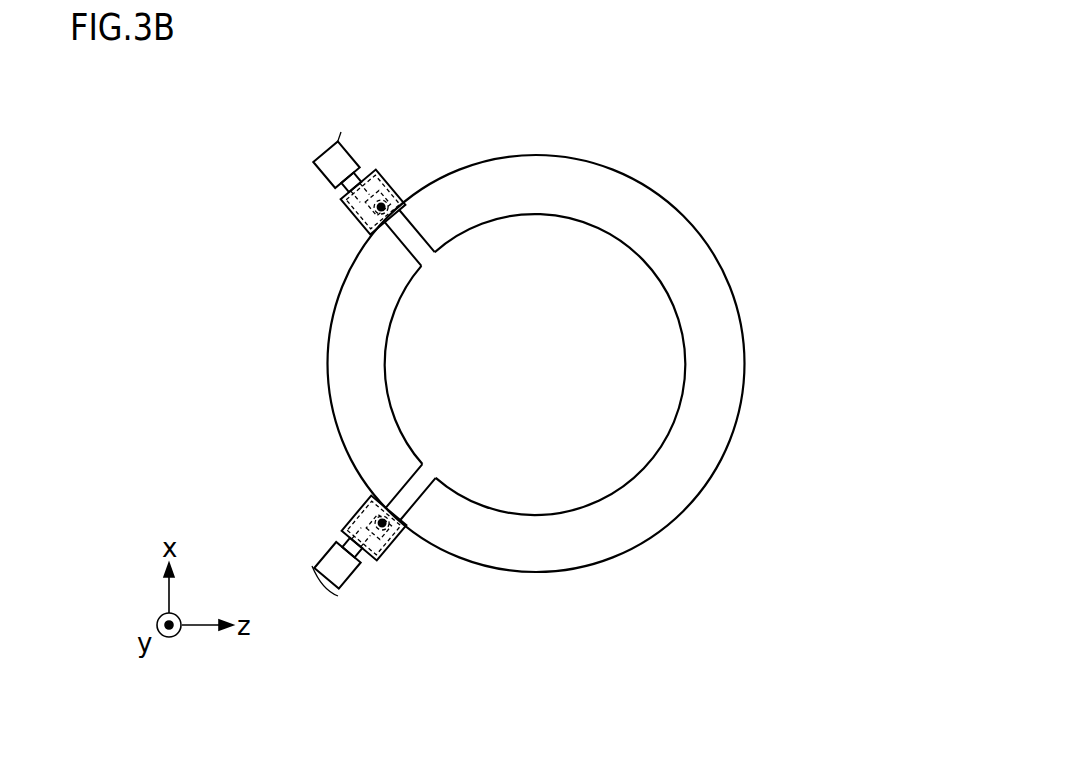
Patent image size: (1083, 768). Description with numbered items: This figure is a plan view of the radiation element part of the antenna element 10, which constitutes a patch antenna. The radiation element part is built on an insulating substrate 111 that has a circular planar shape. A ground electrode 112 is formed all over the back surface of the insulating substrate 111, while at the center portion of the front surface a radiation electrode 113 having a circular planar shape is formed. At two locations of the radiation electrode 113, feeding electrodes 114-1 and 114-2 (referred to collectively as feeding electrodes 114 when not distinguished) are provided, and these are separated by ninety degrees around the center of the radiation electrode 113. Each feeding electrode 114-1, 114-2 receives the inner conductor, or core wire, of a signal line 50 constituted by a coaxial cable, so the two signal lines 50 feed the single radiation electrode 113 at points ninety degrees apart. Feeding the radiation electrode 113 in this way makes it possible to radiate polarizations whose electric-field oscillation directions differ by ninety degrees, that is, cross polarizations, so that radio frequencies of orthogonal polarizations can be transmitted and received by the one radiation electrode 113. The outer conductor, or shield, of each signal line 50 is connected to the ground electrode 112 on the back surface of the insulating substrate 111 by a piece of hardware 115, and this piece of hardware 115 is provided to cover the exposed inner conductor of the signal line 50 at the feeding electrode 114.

The antenna element 10 is at (708, 173).
The signal line 50 is at (316, 168).
The insulating substrate 111 is at (722, 341).
The ground electrode 112 is at (719, 471).
The radiation electrode 113 is at (653, 395).
The feeding electrode 114 is at (462, 365).
The feeding electrode 114-1 is at (428, 480).
The feeding electrode 114-2 is at (426, 250).
The piece of hardware 115 is at (363, 221).